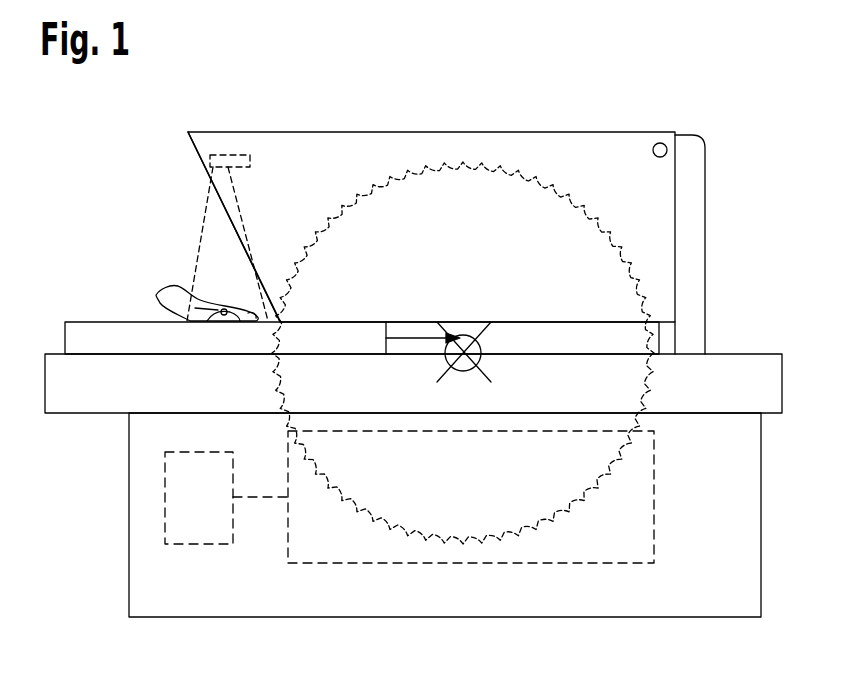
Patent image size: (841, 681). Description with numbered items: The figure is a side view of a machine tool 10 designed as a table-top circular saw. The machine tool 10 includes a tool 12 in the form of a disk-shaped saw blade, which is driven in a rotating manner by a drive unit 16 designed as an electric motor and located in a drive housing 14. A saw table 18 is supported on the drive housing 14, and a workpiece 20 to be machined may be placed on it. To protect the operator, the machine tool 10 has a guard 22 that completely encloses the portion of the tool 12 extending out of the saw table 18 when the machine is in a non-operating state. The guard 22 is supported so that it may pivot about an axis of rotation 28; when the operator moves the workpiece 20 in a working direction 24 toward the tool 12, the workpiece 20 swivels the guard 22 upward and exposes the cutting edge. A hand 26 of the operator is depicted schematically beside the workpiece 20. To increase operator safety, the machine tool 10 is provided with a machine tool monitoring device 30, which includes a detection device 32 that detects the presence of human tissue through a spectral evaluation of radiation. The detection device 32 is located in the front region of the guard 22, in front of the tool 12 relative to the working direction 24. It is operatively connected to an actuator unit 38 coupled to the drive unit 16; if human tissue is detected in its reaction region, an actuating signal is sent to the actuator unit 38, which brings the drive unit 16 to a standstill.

The machine tool 10 is at (614, 98).
The tool 12 is at (478, 162).
The drive housing 14 is at (689, 590).
The drive unit 16 is at (567, 550).
The saw table 18 is at (78, 397).
The workpiece 20 is at (88, 330).
The guard 22 is at (389, 148).
The working direction 24 is at (417, 328).
The hand 26 is at (178, 293).
The axis of rotation 28 is at (662, 143).
The machine tool monitoring device 30 is at (264, 155).
The detection device 32 is at (222, 142).
The actuator unit 38 is at (182, 530).